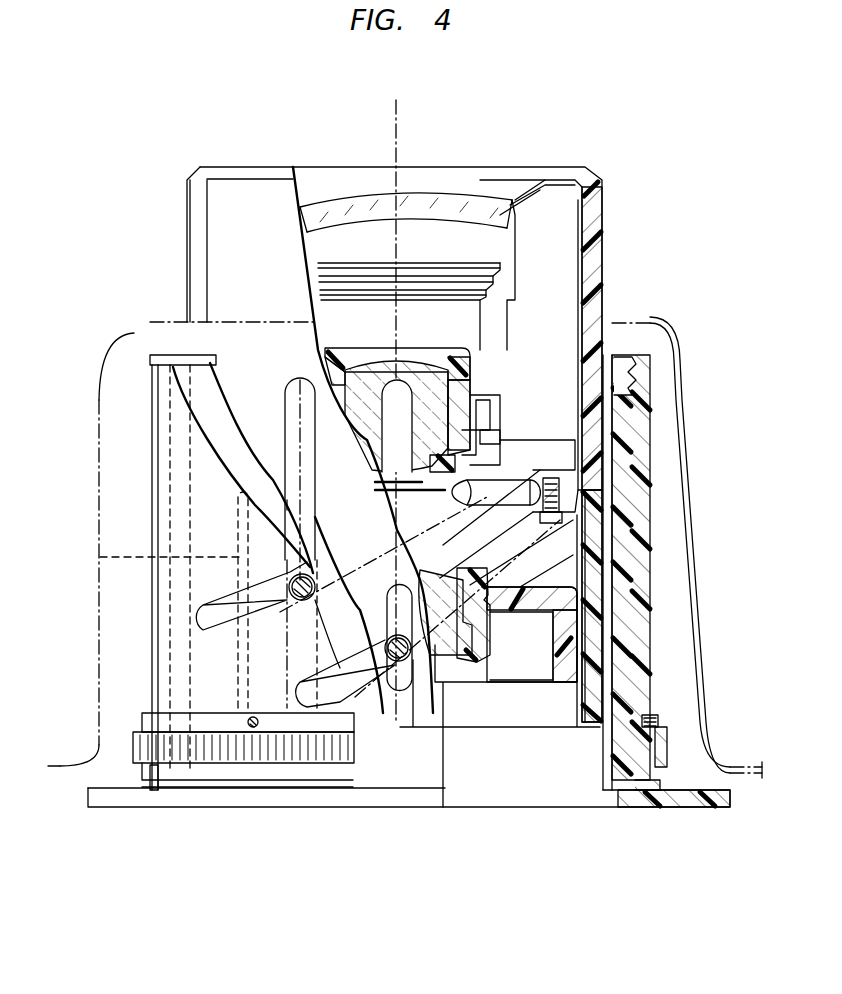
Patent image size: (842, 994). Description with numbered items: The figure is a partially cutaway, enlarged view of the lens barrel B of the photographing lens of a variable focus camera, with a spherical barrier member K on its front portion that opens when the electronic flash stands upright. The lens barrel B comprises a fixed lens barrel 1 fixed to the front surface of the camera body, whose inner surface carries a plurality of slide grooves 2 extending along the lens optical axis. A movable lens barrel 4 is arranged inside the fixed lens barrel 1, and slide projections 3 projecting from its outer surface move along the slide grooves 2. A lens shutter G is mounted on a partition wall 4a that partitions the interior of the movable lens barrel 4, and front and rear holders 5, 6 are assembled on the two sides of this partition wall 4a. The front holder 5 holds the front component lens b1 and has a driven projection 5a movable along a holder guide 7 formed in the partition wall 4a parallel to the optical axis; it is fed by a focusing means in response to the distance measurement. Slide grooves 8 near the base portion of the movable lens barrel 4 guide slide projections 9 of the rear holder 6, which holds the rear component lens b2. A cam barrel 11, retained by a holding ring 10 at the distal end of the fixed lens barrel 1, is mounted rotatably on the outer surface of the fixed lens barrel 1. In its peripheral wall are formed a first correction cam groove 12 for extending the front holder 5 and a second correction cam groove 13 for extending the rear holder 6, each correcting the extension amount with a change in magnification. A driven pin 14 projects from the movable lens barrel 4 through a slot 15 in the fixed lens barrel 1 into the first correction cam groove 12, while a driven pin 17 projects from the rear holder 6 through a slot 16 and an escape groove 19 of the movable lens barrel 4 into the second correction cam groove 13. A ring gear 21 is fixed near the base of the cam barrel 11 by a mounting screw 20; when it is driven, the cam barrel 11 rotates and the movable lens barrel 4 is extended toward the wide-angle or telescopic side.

The lens barrel B is at (615, 270).
The spherical barrier member K is at (356, 200).
The front component lens b1 is at (427, 378).
The rear component lens b2 is at (443, 625).
The fixed lens barrel 1 is at (623, 783).
The slide grooves 2 is at (640, 454).
The slide projections 3 is at (110, 557).
The movable lens barrel 4 is at (647, 357).
The partition wall 4a is at (560, 492).
The front holder 5 is at (490, 405).
The driven projection 5a is at (500, 437).
The rear holder 6 is at (577, 570).
The holder guide 7 is at (476, 440).
The slide grooves 8 is at (580, 540).
The slide projections 9 is at (575, 630).
The holding ring 10 is at (647, 360).
The cam barrel 11 is at (203, 470).
The first correction cam groove 12 is at (213, 596).
The second correction cam groove 13 is at (330, 722).
The driven pin 14 is at (287, 610).
The slot 15 is at (290, 505).
The slot 16 is at (418, 720).
The driven pin 17 is at (390, 690).
The escape groove 19 is at (418, 660).
The mounting screw 20 is at (250, 728).
The ring gear 21 is at (160, 748).
The lens shutter G is at (467, 490).